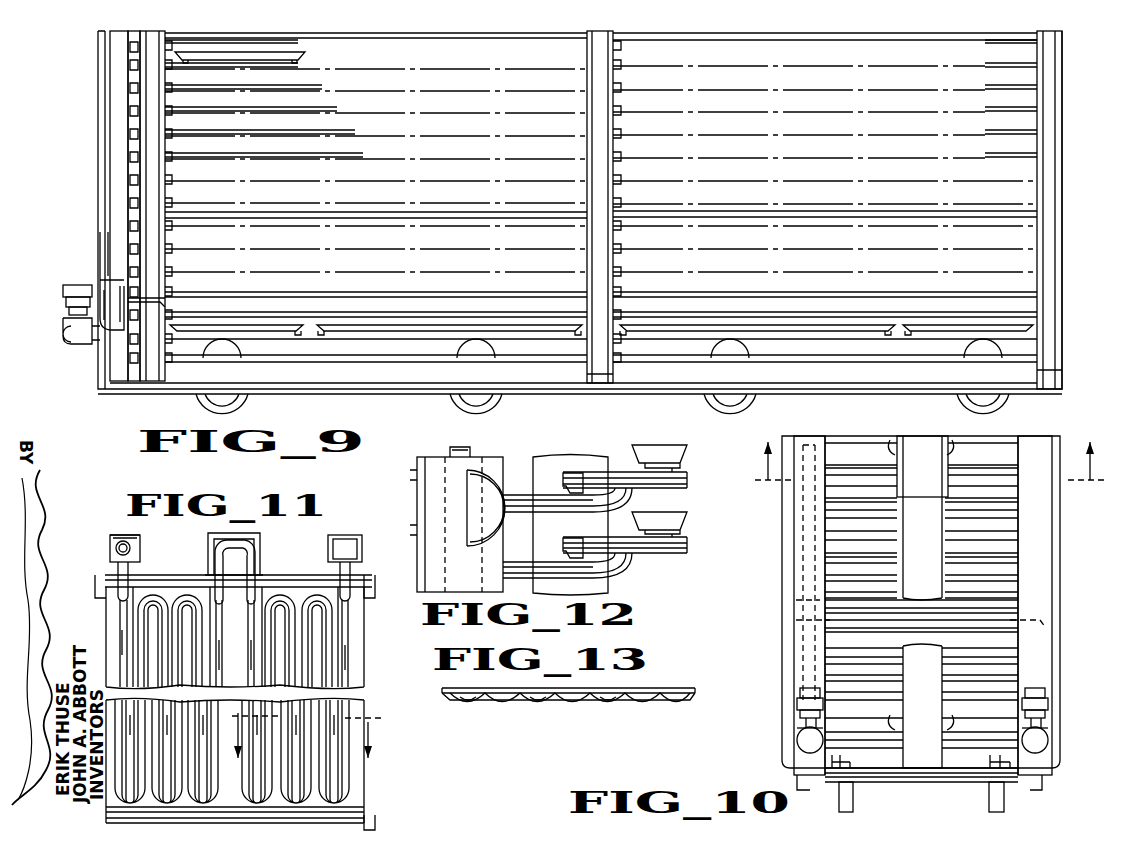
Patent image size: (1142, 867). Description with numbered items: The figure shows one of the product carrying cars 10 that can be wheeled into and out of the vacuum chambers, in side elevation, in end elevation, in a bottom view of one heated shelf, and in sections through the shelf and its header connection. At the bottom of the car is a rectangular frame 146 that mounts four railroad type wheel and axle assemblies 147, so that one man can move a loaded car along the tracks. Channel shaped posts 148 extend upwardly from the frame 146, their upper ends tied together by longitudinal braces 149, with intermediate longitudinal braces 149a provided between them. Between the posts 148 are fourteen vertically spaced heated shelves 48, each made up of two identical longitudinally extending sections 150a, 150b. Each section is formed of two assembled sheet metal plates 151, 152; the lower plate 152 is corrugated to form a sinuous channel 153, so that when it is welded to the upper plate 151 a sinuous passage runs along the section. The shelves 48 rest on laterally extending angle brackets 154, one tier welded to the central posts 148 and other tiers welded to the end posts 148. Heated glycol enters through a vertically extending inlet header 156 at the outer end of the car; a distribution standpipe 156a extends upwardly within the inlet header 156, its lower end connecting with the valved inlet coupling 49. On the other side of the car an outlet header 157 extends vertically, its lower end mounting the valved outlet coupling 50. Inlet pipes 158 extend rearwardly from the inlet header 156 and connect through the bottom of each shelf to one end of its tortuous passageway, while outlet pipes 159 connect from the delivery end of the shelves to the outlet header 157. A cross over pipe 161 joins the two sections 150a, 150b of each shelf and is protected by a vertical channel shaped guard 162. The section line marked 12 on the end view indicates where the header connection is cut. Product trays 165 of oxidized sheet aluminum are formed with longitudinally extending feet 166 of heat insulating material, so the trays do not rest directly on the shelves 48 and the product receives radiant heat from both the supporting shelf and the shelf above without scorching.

In FIG. 9, the car 10 is at (98, 74).
In FIG. 10, the car 10 is at (790, 628).
In FIG. 10, the section line 12 is at (832, 522).
In FIG. 9, the heated shelf 48 is at (368, 148).
In FIG. 10, the heated shelf 48 is at (1008, 465).
In FIG. 11, the heated shelf 48 is at (364, 708).
In FIG. 12, the heated shelf 48 is at (690, 478).
In FIG. 13, the heated shelf 48 is at (655, 686).
In FIG. 9, the valved inlet coupling 49 is at (63, 300).
In FIG. 10, the valved inlet coupling 49 is at (800, 700).
In FIG. 10, the valved outlet coupling 50 is at (1048, 698).
In FIG. 9, the rectangular frame 146 is at (525, 383).
In FIG. 10, the rectangular frame 146 is at (876, 778).
In FIG. 9, the wheel and axle assembly 147 is at (246, 403).
In FIG. 10, the wheel and axle assembly 147 is at (855, 807).
In FIG. 9, the post 148 is at (140, 166).
In FIG. 10, the post 148 is at (1055, 565).
In FIG. 11, the post 148 is at (98, 578).
In FIG. 12, the post 148 is at (560, 456).
In FIG. 9, the longitudinal brace 149 is at (502, 34).
In FIG. 9, the intermediate longitudinal brace 149a is at (356, 208).
In FIG. 11, the shelf section 150a is at (268, 590).
In FIG. 13, the shelf section 150a is at (447, 703).
In FIG. 11, the shelf section 150b is at (162, 582).
In FIG. 12, the upper plate 151 is at (615, 470).
In FIG. 13, the upper plate 151 is at (665, 688).
In FIG. 11, the lower plate 152 is at (108, 623).
In FIG. 12, the lower plate 152 is at (632, 488).
In FIG. 13, the lower plate 152 is at (680, 698).
In FIG. 11, the sinuous channel 153 is at (180, 648).
In FIG. 13, the sinuous channel 153 is at (625, 705).
In FIG. 9, the angle bracket 154 is at (622, 140).
In FIG. 10, the angle bracket 154 is at (955, 446).
In FIG. 12, the angle bracket 154 is at (562, 472).
In FIG. 9, the inlet header 156 is at (110, 262).
In FIG. 10, the inlet header 156 is at (800, 590).
In FIG. 11, the inlet header 156 is at (110, 548).
In FIG. 12, the inlet header 156 is at (417, 470).
In FIG. 9, the distribution standpipe 156a is at (108, 296).
In FIG. 10, the distribution standpipe 156a is at (805, 603).
In FIG. 11, the distribution standpipe 156a is at (122, 536).
In FIG. 12, the distribution standpipe 156a is at (460, 448).
In FIG. 9, the outlet header 157 is at (110, 188).
In FIG. 10, the outlet header 157 is at (1040, 583).
In FIG. 11, the outlet header 157 is at (350, 550).
In FIG. 9, the inlet pipe 158 is at (165, 299).
In FIG. 11, the inlet pipe 158 is at (130, 560).
In FIG. 12, the inlet pipe 158 is at (500, 540).
In FIG. 9, the outlet pipe 159 is at (172, 100).
In FIG. 11, the outlet pipe 159 is at (352, 565).
In FIG. 11, the cross over pipe 161 is at (234, 548).
In FIG. 10, the channel shaped guard 162 is at (940, 498).
In FIG. 11, the channel shaped guard 162 is at (232, 534).
In FIG. 9, the product tray 165 is at (246, 328).
In FIG. 10, the product tray 165 is at (1012, 624).
In FIG. 12, the product tray 165 is at (672, 448).
In FIG. 9, the foot 166 is at (320, 334).
In FIG. 12, the foot 166 is at (685, 468).